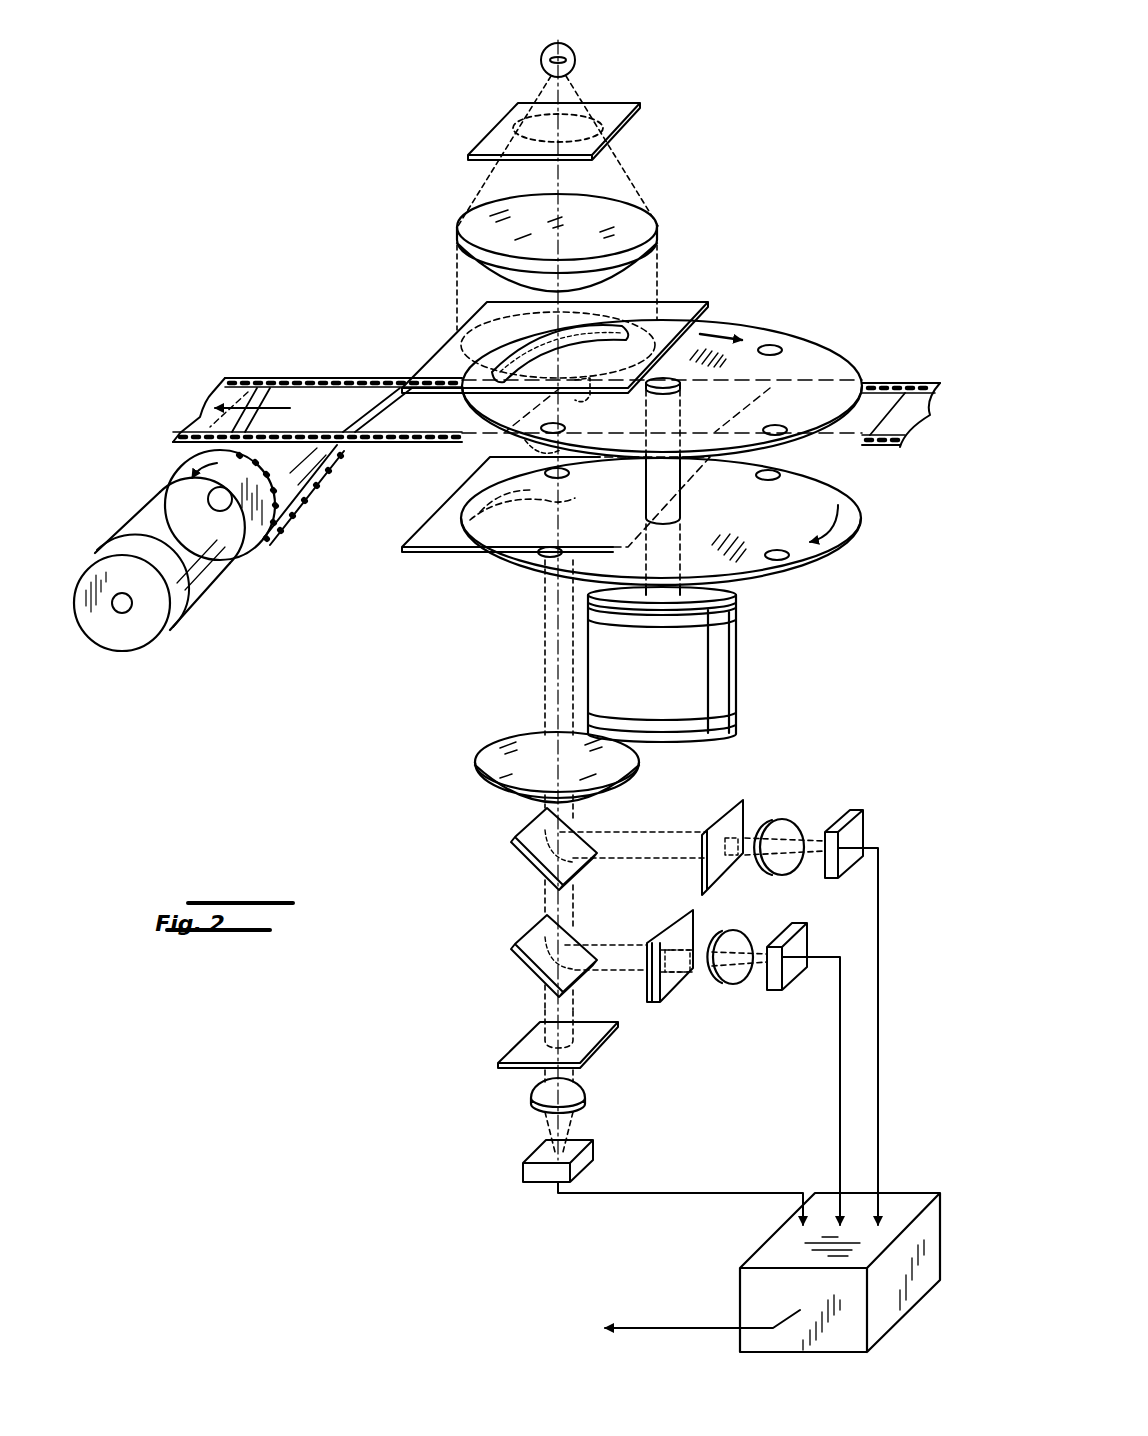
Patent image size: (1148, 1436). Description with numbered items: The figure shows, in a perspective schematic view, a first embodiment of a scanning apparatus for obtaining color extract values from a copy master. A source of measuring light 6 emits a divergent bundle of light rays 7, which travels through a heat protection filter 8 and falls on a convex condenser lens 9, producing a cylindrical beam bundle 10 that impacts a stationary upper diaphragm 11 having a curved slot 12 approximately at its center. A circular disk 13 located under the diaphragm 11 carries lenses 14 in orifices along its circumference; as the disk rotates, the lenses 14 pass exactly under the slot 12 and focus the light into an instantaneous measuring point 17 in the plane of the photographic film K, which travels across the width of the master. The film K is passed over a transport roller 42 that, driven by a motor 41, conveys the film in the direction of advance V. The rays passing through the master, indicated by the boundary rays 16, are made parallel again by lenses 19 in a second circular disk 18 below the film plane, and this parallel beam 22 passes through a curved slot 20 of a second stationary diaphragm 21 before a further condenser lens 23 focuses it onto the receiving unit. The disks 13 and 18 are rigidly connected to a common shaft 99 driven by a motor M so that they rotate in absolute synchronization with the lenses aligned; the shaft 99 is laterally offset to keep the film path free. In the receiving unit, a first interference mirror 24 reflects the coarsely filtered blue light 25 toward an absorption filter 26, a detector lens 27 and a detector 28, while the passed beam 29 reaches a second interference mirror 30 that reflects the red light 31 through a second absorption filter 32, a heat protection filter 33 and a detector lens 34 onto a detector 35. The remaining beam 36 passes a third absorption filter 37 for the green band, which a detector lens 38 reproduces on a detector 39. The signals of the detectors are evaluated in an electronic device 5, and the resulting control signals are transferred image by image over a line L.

The electronic device 5 is at (750, 1292).
The source of measuring light 6 is at (572, 52).
The divergent bundle of light rays 7 is at (585, 92).
The heat protection filter 8 is at (610, 114).
The convex condenser lens 9 is at (630, 212).
The cylindrical beam bundle 10 is at (660, 278).
The upper diaphragm 11 is at (690, 307).
The curved slot 12 is at (490, 364).
The circular disk 13 is at (802, 352).
The lenses 14 is at (497, 345).
The boundary rays 16 is at (525, 440).
The measuring point 17 is at (590, 380).
The second circular disk 18 is at (846, 514).
The lenses 19 is at (562, 478).
The curved slot 20 is at (460, 520).
The second stationary diaphragm 21 is at (425, 549).
The parallel beam 22 is at (545, 664).
The condenser lens 23 is at (492, 762).
The first interference mirror 24 is at (525, 850).
The coarsely filtered blue light 25 is at (652, 832).
The absorption filter 26 is at (738, 822).
The detector lens 27 is at (786, 830).
The detector 28 is at (845, 818).
The beam passed by the first mirror 29 is at (545, 897).
The second interference mirror 30 is at (525, 960).
The red light 31 is at (602, 944).
The second absorption filter 32 is at (654, 940).
The heat protection filter 33 is at (690, 934).
The detector lens 34 is at (730, 978).
The detector 35 is at (795, 970).
The beam passed by the second mirror 36 is at (545, 1007).
The third absorption filter 37 is at (522, 1052).
The detector lens 38 is at (535, 1092).
The detector 39 is at (532, 1172).
The motor 41 is at (132, 636).
The transport roller 42 is at (300, 490).
The common shaft 99 is at (683, 508).
The photographic film K is at (330, 400).
The direction of advance V is at (283, 395).
The motor M is at (718, 680).
The line L is at (677, 1327).